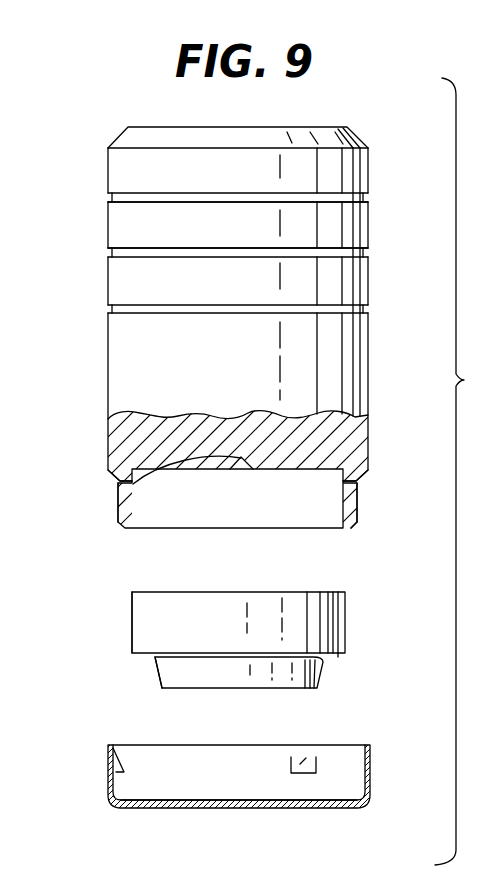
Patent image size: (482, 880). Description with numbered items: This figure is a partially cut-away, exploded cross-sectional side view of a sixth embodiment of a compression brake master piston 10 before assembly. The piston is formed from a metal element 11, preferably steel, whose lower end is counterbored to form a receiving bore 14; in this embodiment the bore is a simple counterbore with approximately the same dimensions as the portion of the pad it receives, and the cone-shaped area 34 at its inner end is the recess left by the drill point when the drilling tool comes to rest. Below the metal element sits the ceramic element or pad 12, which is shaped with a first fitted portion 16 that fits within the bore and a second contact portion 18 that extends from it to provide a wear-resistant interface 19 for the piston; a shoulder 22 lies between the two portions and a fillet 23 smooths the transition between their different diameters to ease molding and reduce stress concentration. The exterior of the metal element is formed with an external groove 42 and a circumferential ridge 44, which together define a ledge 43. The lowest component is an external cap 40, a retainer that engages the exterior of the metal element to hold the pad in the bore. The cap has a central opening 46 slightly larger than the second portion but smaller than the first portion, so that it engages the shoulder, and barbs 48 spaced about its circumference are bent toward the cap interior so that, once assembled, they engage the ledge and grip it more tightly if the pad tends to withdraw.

The compression brake master piston 10 is at (387, 146).
The metal element 11 is at (370, 227).
The ceramic element 12 is at (345, 607).
The receiving bore 14 is at (327, 518).
The first fitted portion 16 is at (132, 612).
The second contact portion 18 is at (157, 677).
The wear-resistant interface 19 is at (258, 690).
The shoulder 22 is at (345, 655).
The fillet 23 is at (153, 661).
The cone-shaped area 34 is at (121, 483).
The external cap 40 is at (370, 765).
The external groove 42 is at (362, 474).
The ledge 43 is at (361, 495).
The circumferential ridge 44 is at (360, 512).
The central opening 46 is at (246, 803).
The barbs 48 is at (108, 768).